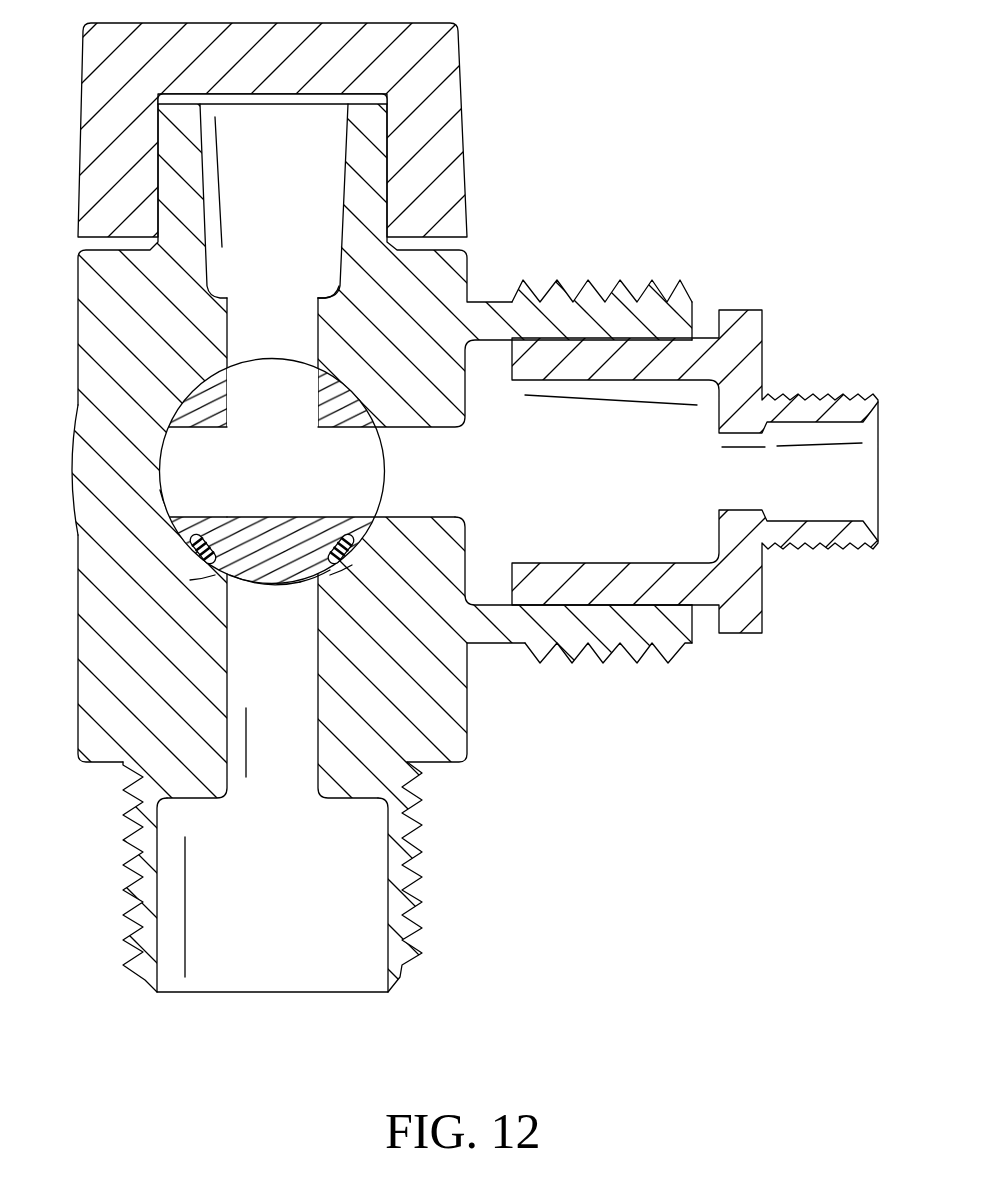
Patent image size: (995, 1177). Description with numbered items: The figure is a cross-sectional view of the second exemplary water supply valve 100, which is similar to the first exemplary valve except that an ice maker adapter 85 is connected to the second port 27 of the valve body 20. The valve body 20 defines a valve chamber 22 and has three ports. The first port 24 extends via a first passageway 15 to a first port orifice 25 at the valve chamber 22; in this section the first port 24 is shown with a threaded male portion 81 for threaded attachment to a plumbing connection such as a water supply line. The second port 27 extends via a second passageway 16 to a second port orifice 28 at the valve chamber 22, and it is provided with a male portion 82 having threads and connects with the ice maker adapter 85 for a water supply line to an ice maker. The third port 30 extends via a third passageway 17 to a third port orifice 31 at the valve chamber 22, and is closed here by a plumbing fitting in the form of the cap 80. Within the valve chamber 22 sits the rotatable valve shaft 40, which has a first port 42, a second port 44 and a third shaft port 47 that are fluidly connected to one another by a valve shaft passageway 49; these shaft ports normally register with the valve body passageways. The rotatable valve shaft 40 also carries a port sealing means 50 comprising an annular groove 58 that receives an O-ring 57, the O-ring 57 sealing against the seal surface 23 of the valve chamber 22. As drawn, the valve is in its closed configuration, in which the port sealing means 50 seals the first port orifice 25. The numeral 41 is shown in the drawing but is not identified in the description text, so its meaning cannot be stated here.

The second exemplary water supply valve 100 is at (618, 143).
The cap 80 is at (447, 58).
The third port 30 is at (273, 108).
The valve shaft passageway 49 is at (248, 365).
The second port 44 is at (257, 415).
The third port orifice 31 is at (317, 373).
The third passageway 17 is at (320, 330).
The valve body 20 is at (520, 265).
The ice maker adapter 85 is at (817, 407).
The second port 27 is at (693, 605).
The male portion 82 is at (635, 645).
The second passageway 16 is at (415, 522).
The first passageway 15 is at (317, 743).
The first port 24 is at (323, 993).
The threaded male portion 81 is at (423, 877).
The rotatable valve shaft 40 is at (393, 475).
The first port 42 is at (388, 452).
The seal surface 23 is at (163, 447).
The second port orifice 28 is at (378, 520).
The third shaft port 47 is at (158, 480).
The valve chamber 22 is at (178, 530).
The O-ring 57 is at (205, 534).
The annular groove 58 is at (330, 546).
The port sealing means 50 is at (344, 569).
The ball lower portion 41 is at (282, 563).
The first port orifice 25 is at (312, 577).